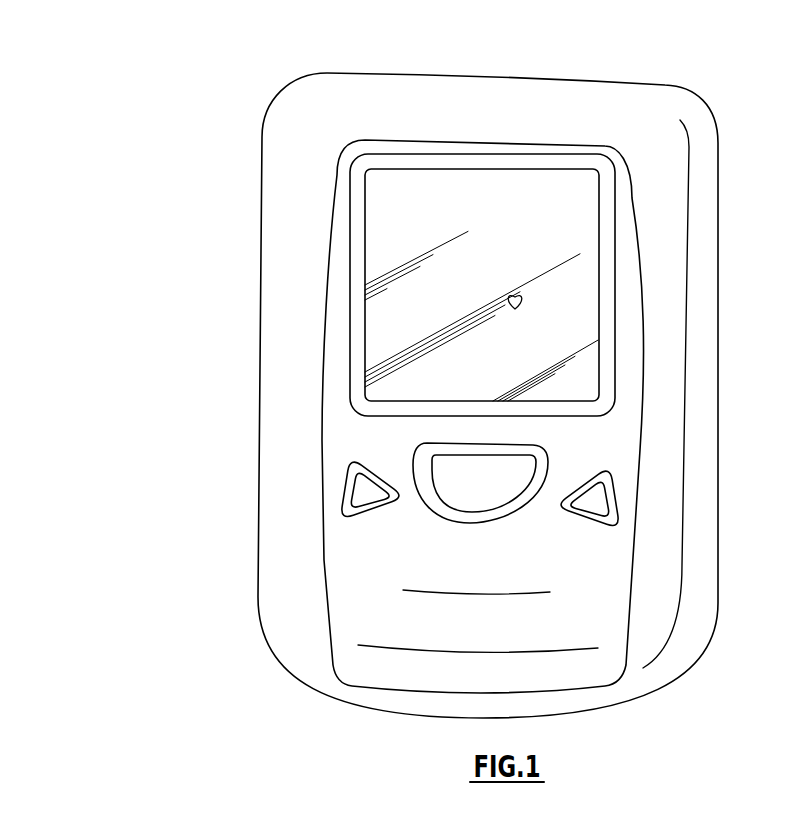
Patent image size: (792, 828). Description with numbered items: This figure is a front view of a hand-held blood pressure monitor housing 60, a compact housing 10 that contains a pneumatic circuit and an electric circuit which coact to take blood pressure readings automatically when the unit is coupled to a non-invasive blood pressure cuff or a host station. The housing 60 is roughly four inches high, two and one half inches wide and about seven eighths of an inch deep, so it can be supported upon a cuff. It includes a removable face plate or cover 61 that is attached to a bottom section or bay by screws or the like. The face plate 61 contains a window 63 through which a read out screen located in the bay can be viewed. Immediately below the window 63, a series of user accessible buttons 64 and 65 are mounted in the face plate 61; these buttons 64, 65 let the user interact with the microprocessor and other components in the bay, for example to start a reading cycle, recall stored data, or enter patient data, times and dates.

The compact housing 10 is at (445, 360).
The blood pressure monitor housing 60 is at (250, 413).
The face plate 61 is at (272, 592).
The window 63 is at (582, 207).
The user accessible button 64 is at (475, 502).
The user accessible buttons 65 is at (358, 494).